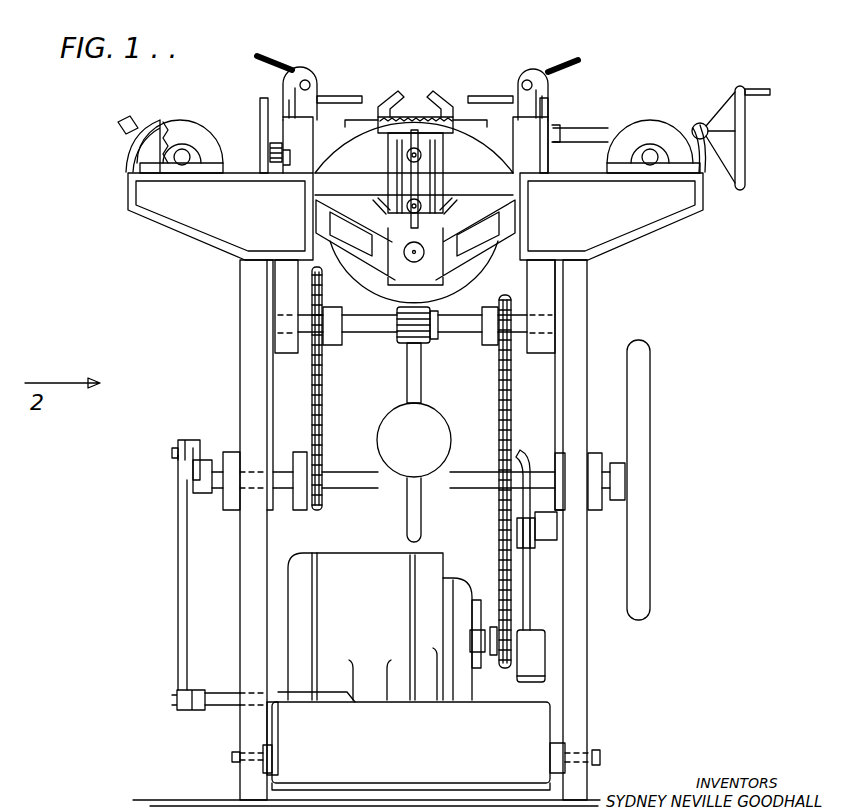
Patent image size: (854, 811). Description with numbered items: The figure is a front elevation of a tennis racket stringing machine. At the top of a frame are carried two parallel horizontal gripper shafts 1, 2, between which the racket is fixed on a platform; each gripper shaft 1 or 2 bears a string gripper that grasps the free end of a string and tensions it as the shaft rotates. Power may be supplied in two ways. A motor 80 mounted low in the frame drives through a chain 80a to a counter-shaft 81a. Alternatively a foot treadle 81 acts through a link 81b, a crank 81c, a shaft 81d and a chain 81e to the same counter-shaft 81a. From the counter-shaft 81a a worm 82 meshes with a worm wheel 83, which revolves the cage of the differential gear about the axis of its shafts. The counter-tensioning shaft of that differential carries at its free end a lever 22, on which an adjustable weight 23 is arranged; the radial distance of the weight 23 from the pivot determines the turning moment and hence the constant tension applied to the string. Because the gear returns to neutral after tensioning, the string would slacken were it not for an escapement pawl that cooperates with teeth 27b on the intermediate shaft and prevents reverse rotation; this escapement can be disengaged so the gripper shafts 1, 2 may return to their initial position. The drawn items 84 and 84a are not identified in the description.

The gripper shaft 1 is at (188, 152).
The teeth 27b is at (272, 152).
The gripper shaft 2 is at (663, 138).
The worm wheel 83 is at (462, 278).
The counter-shaft 81a is at (376, 328).
The worm 82 is at (431, 341).
The chain 80a is at (497, 404).
The chain 81e is at (324, 423).
The crank 81c is at (200, 439).
The link 81b is at (178, 556).
The shaft 81d is at (370, 484).
The adjustable weight 23 is at (414, 440).
The lever 22 is at (416, 510).
The actuating rod 84a is at (528, 446).
The switch box 84 is at (536, 651).
The motor 80 is at (379, 627).
The foot treadle 81 is at (545, 726).